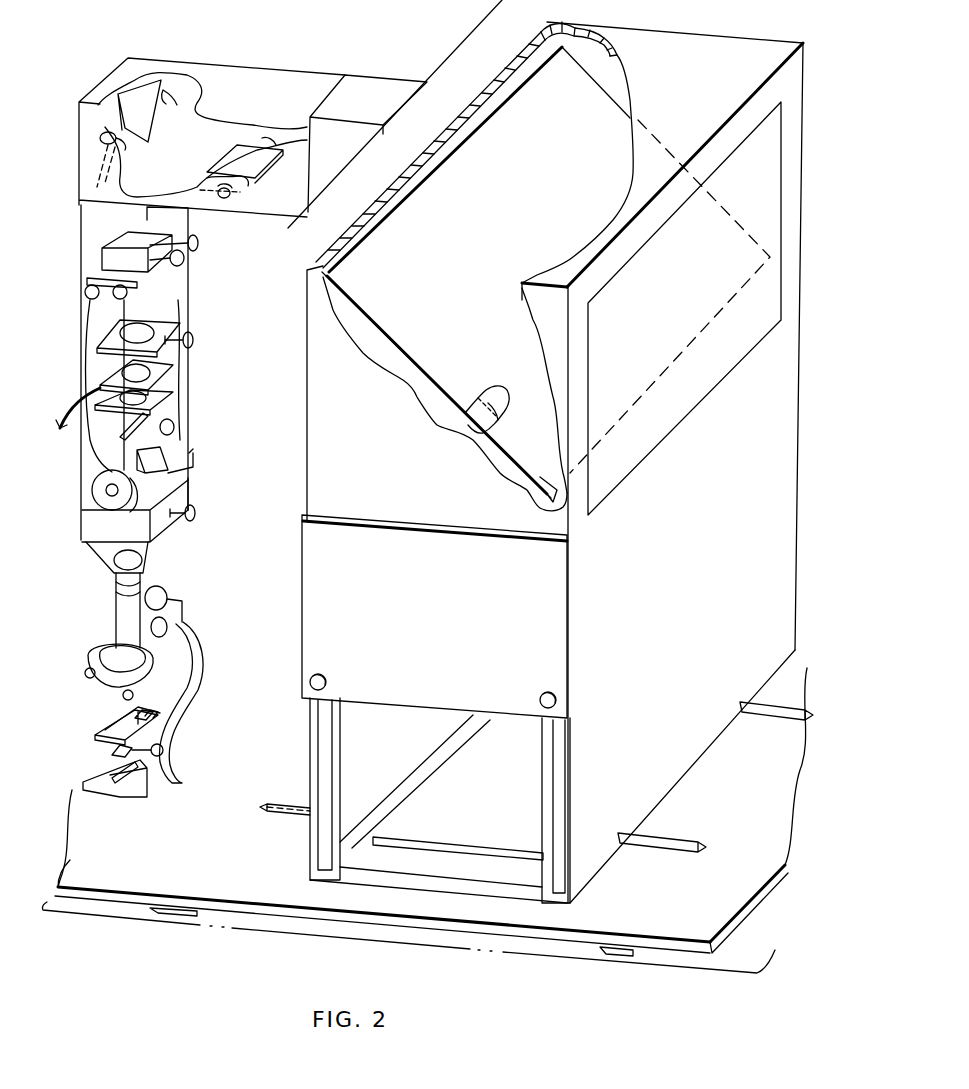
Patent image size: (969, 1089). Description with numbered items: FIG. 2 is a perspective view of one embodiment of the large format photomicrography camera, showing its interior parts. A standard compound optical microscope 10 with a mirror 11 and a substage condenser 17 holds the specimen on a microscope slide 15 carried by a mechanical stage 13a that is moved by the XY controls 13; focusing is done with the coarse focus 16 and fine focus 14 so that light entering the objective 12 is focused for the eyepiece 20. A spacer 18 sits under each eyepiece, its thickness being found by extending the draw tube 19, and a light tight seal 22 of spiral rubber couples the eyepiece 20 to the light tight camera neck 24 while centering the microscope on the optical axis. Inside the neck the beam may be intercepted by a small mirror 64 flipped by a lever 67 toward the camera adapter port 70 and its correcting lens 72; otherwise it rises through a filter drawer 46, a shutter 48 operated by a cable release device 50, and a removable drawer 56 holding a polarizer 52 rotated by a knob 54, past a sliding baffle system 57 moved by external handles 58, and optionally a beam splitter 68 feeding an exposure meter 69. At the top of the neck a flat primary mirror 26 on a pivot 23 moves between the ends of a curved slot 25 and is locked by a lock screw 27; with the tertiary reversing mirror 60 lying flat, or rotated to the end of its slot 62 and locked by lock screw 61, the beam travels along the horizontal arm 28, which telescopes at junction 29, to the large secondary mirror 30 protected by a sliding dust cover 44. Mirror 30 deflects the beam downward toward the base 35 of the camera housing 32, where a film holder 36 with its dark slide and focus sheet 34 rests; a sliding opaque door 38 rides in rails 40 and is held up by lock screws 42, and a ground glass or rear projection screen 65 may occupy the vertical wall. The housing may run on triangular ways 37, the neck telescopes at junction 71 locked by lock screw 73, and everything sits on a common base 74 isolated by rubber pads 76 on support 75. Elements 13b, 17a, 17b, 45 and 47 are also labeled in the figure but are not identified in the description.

The compound optical microscope 10 is at (200, 677).
The mirror 11 is at (125, 785).
The objective 12 is at (108, 692).
The XY controls 13 is at (168, 730).
The mechanical stage 13a is at (110, 726).
The plate portion 13b is at (175, 713).
The fine focus 14 is at (170, 626).
The microscope slide 15 is at (130, 719).
The coarse focus 16 is at (167, 593).
The substage condenser 17 is at (112, 751).
The screw 17a is at (165, 752).
The lower plate 17b is at (172, 779).
The spacer 18 is at (116, 580).
The draw tube 19 is at (116, 593).
The eyepiece 20 is at (114, 562).
The light tight seal 22 is at (158, 545).
The pivot 23 is at (95, 186).
The camera neck 24 is at (190, 296).
The curved slot 25 is at (172, 96).
The primary mirror 26 is at (138, 98).
The lock screw 27 is at (100, 136).
The horizontal arm 28 is at (245, 70).
The junction 29 is at (372, 84).
The secondary mirror 30 is at (428, 338).
The camera housing 32 is at (710, 45).
The dark slide and focus sheet 34 is at (518, 830).
The base 35 is at (345, 860).
The photographic film holder 36 is at (432, 848).
The triangular ways 37 is at (288, 816).
The sliding opaque door 38 is at (555, 622).
The rails 40 is at (309, 771).
The lock screws 42 is at (311, 680).
The sliding dust cover 44 is at (487, 36).
The liner strip 45 is at (480, 413).
The filter drawer 46 is at (182, 386).
The lower plate 47 is at (140, 396).
The shutter 48 is at (110, 376).
The shutter cable release device 50 is at (80, 412).
The polarizer 52 is at (128, 334).
The rotary knob 54 is at (195, 345).
The removeable drawer 56 is at (190, 338).
The sliding baffle system 57 is at (112, 250).
The handles 58 is at (200, 247).
The tertiary mirror 60 is at (250, 185).
The lock screw 61 is at (224, 199).
The slot 62 is at (275, 143).
The small mirror 64 is at (140, 455).
The rear projection screen 65 is at (672, 415).
The lever 67 is at (194, 465).
The beam splitter 68 is at (138, 418).
The exposure meter 69 is at (176, 428).
The camera adapter port 70 is at (100, 505).
The junction 71 is at (186, 497).
The correcting lens 72 is at (104, 491).
The lock screw 73 is at (197, 514).
The common base 74 is at (282, 905).
The support 75 is at (541, 965).
The rubber pads 76 is at (170, 915).